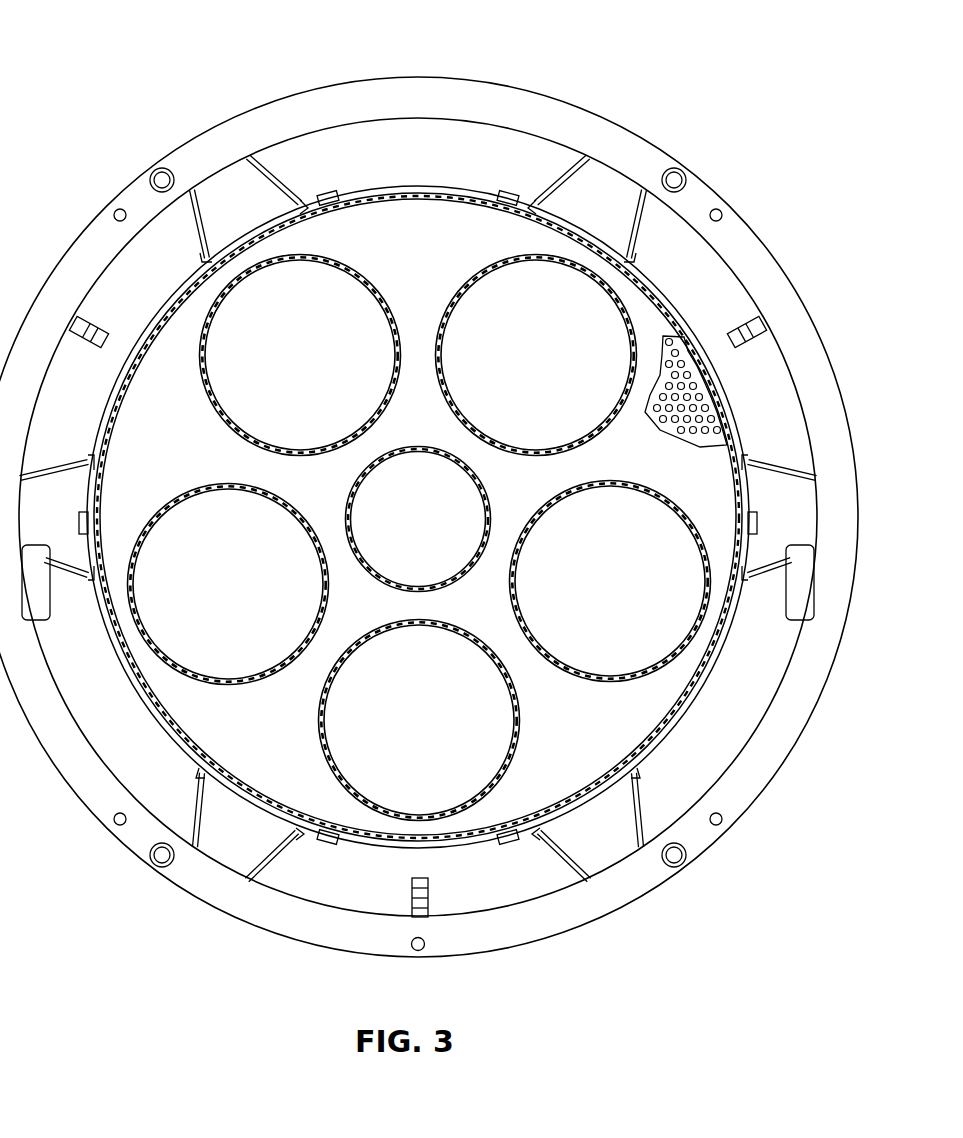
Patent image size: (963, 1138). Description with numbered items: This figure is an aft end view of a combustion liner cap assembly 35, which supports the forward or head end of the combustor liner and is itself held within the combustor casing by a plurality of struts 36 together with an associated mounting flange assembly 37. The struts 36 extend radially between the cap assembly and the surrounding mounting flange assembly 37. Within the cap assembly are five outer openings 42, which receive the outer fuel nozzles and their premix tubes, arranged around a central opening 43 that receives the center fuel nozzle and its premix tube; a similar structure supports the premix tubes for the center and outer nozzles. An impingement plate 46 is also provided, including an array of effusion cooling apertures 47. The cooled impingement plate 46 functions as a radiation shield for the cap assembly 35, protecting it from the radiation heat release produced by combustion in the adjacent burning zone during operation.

The combustion liner cap assembly 35 is at (98, 52).
The mounting flange assembly 37 is at (632, 146).
The struts 36 is at (636, 244).
The impingement plate 46 is at (641, 314).
The effusion cooling apertures 47 is at (700, 392).
The openings 42 is at (497, 273).
The openings 43 is at (470, 500).